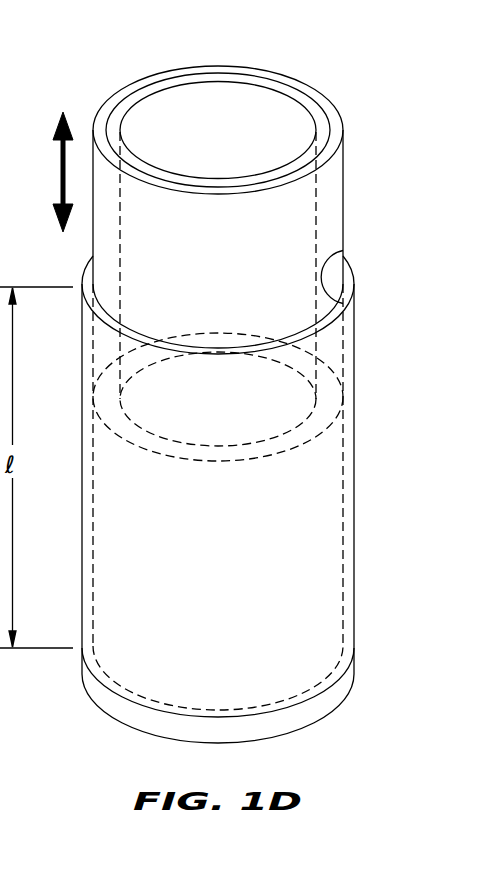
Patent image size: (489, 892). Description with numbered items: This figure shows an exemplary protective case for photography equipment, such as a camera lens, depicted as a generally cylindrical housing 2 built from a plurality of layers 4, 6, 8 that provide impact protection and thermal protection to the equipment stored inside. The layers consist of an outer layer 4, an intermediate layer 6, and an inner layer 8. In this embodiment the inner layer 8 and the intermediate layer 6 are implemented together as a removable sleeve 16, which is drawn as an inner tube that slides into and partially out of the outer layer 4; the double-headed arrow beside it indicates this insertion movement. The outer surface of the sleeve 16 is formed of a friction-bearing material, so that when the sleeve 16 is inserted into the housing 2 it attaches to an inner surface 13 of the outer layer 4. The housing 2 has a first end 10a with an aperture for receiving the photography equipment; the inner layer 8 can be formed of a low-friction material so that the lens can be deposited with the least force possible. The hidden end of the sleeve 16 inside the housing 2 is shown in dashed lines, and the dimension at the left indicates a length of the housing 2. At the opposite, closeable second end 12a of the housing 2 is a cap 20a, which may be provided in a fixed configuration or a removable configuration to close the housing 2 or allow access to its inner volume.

The housing 2 is at (216, 492).
The outer layer 4 is at (350, 290).
The intermediate layer 6 is at (322, 102).
The inner layer 8 is at (259, 81).
The first end 10a is at (215, 246).
The second end 12a is at (322, 714).
The inner surface 13 is at (339, 253).
The removable sleeve 16 is at (328, 219).
The cap 20a is at (100, 690).